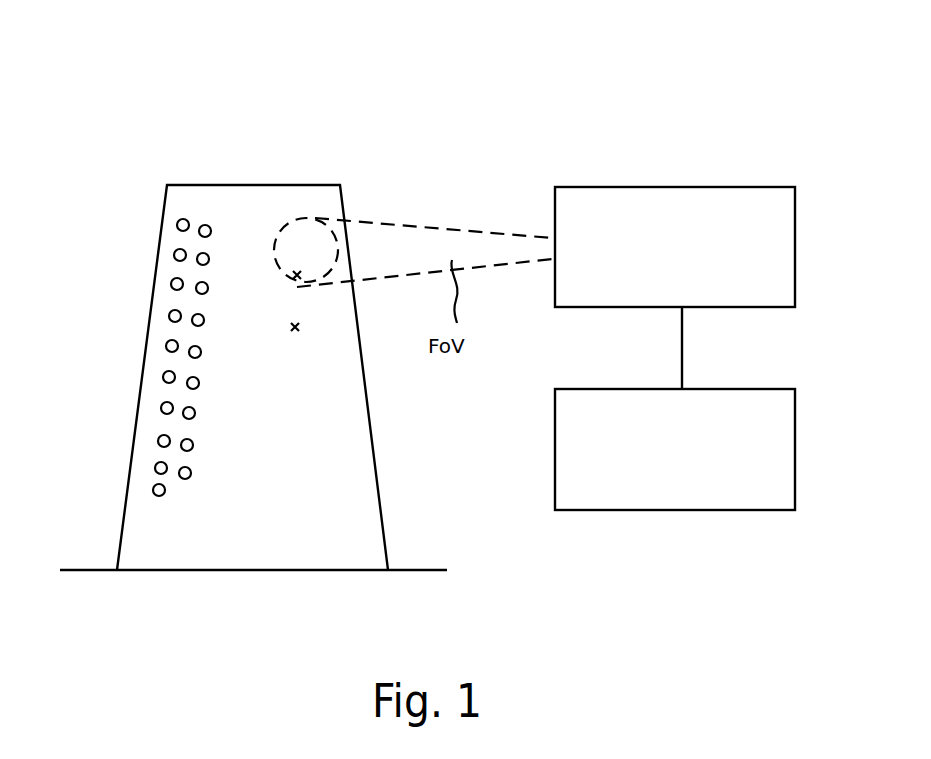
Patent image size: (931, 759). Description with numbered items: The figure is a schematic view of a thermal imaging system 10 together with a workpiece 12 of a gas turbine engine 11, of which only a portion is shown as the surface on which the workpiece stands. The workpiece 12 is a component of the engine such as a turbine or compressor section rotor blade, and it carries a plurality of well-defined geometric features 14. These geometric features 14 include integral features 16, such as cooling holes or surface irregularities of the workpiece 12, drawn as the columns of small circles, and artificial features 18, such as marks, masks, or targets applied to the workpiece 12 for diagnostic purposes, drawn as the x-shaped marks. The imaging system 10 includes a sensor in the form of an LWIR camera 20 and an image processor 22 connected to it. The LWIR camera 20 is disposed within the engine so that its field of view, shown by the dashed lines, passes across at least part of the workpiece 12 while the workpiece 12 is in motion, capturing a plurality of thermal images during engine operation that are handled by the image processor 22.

The thermal imaging system 10 is at (663, 82).
The gas turbine engine 11 is at (410, 570).
The workpiece 12 is at (259, 185).
The geometric features 14 is at (160, 448).
The integral features 16 is at (200, 291).
The artificial features 18 is at (293, 279).
The LWIR camera 20 is at (664, 286).
The image processor 22 is at (662, 492).